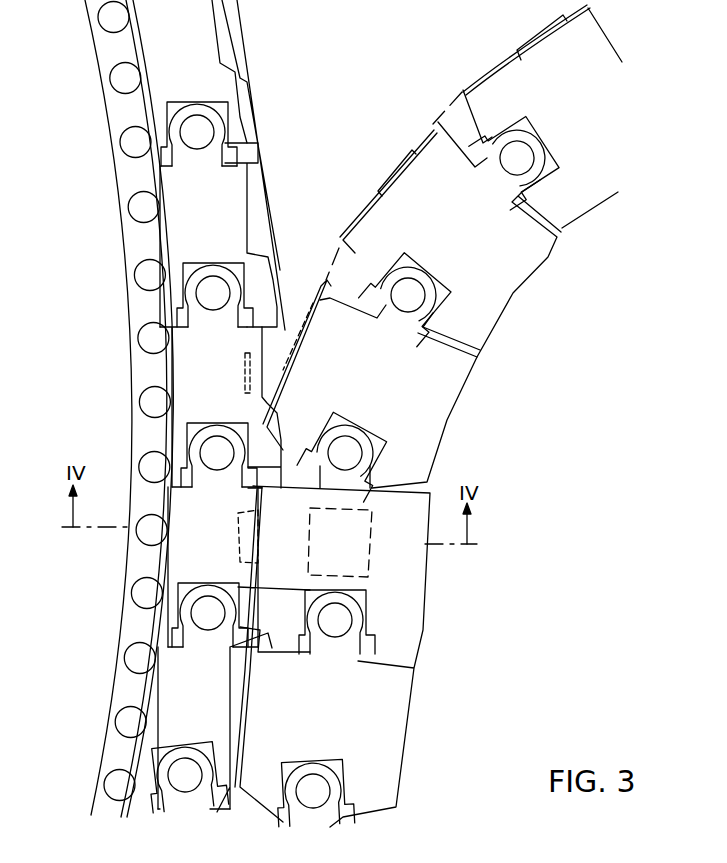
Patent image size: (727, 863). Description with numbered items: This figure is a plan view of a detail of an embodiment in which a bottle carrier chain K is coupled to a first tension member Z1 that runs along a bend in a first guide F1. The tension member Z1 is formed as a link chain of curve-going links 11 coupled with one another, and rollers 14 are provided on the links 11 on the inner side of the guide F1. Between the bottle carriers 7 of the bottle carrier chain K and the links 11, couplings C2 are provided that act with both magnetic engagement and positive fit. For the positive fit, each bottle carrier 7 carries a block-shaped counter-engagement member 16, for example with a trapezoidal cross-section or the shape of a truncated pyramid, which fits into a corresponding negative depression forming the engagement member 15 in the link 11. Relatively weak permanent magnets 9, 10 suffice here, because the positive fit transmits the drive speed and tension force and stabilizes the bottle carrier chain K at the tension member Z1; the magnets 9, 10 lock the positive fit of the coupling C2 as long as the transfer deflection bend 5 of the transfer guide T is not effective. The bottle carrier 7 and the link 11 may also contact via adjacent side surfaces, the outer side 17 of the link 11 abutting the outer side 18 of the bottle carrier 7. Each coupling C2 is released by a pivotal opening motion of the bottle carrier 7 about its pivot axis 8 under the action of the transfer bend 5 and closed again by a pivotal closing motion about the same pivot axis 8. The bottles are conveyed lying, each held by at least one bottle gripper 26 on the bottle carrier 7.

The first guide F1 is at (230, 22).
The first tension member Z1 is at (191, 209).
The rollers 14 is at (147, 337).
The links 11 is at (182, 362).
The permanent magnet 9 is at (245, 367).
The engagement member 15 is at (283, 330).
The counter-engagement member 16 is at (317, 303).
The permanent magnet 10 is at (318, 333).
The outer side of the bottle carrier 18 is at (250, 575).
The outer side of the link 17 is at (248, 583).
The bottle carrier chain K is at (545, 267).
The bottle carrier 7 is at (497, 273).
The pivot axis 8 is at (415, 297).
The bottle gripper 26 is at (373, 558).
The coupling C2 is at (268, 527).
The transfer deflection bend 5 is at (465, 90).
The transfer guide T is at (447, 105).